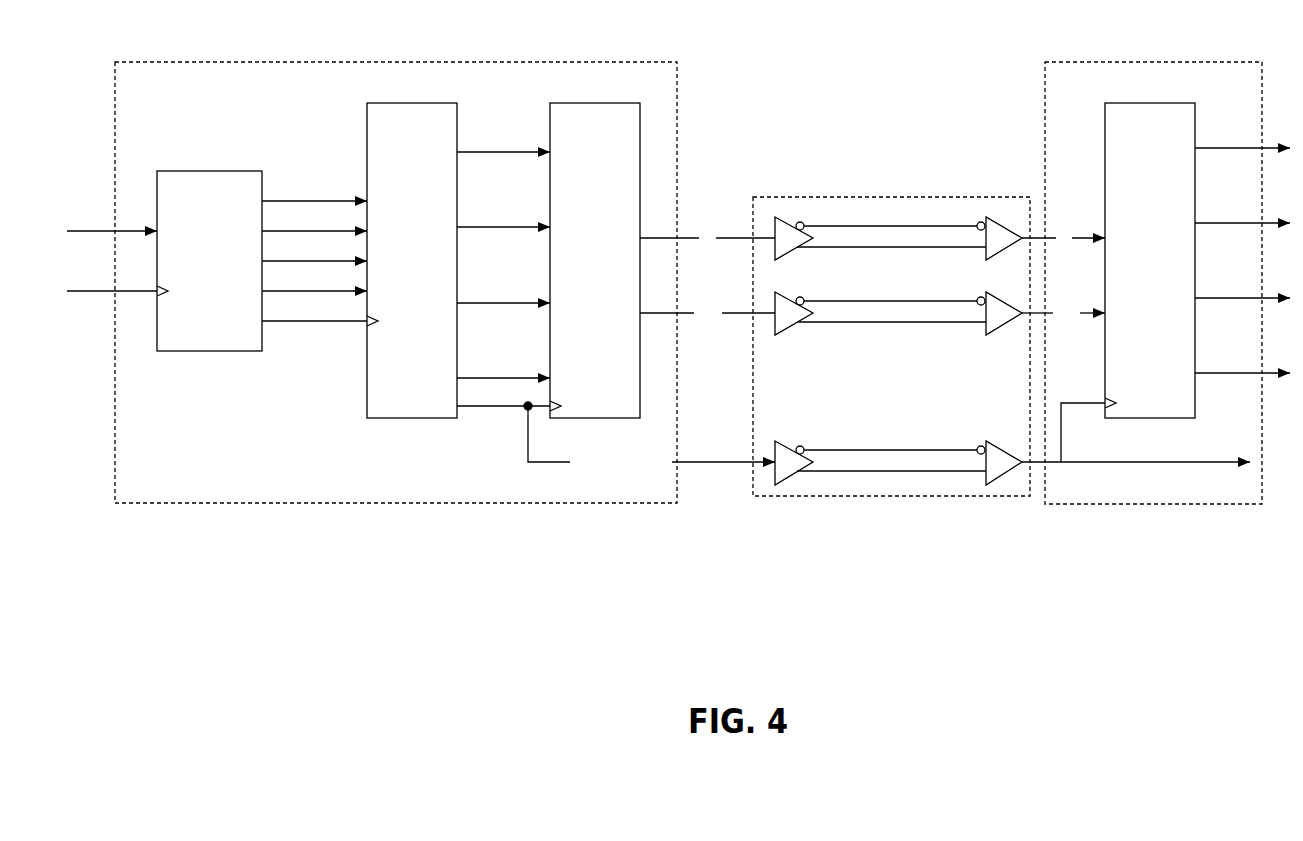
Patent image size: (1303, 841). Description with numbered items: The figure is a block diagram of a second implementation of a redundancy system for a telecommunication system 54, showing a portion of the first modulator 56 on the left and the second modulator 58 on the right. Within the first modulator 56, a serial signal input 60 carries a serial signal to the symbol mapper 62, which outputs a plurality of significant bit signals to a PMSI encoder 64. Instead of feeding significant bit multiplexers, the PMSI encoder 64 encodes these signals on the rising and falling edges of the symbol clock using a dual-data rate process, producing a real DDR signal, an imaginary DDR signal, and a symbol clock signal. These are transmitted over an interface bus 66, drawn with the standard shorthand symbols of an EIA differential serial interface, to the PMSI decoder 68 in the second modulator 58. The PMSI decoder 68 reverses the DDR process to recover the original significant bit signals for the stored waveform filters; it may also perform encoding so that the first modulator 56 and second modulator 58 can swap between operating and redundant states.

The redundancy system for a telecommunication system 54 is at (872, 95).
The first modulator 56 is at (272, 504).
The second modulator 58 is at (1112, 505).
The serial signal input 60 is at (106, 233).
The symbol mapper 62 is at (412, 418).
The PMSI encoder 64 is at (595, 103).
The interface bus 66 is at (835, 497).
The PMSI decoder 68 is at (1150, 103).